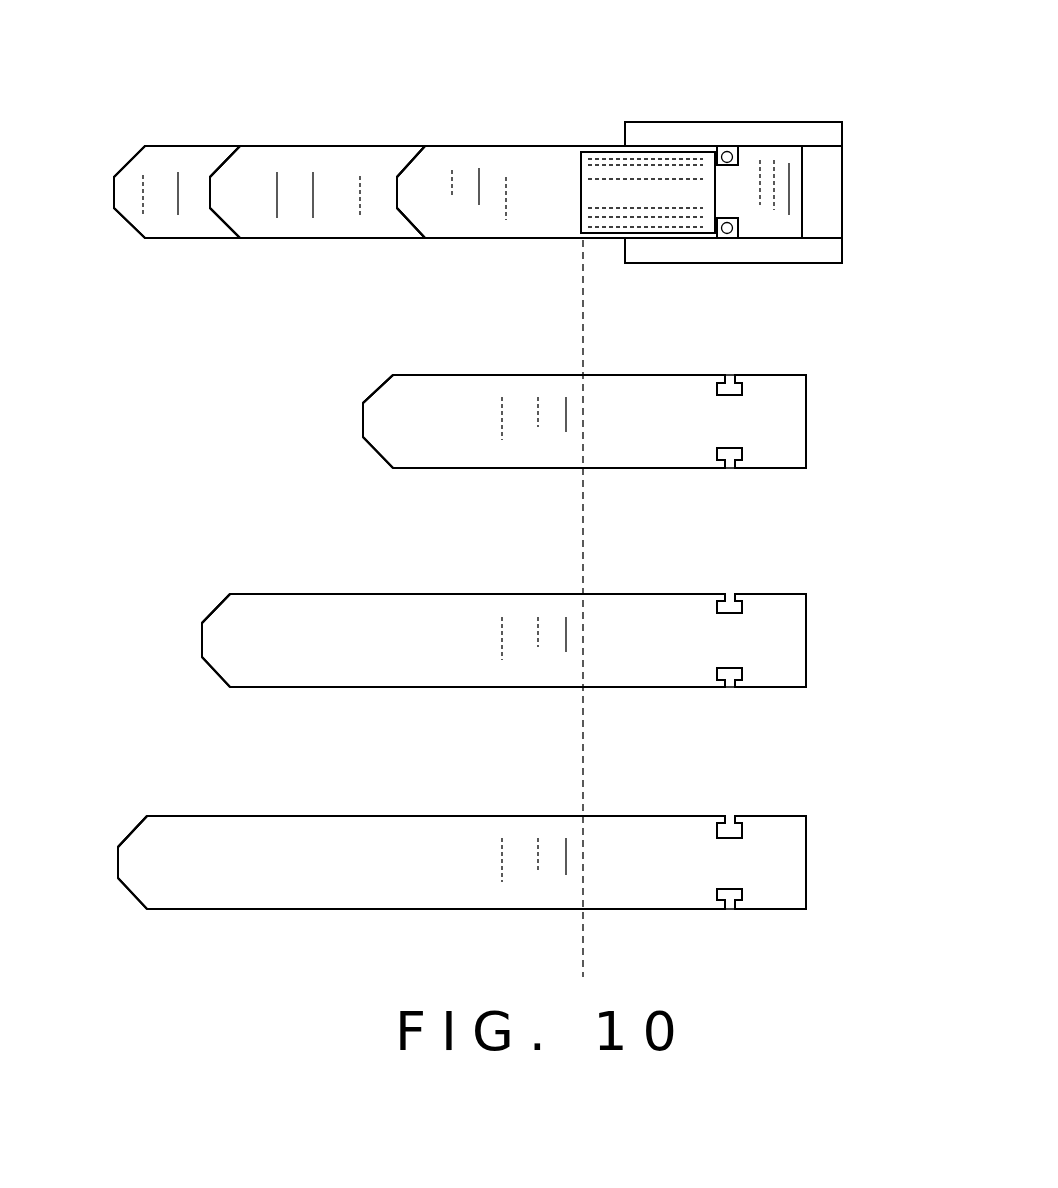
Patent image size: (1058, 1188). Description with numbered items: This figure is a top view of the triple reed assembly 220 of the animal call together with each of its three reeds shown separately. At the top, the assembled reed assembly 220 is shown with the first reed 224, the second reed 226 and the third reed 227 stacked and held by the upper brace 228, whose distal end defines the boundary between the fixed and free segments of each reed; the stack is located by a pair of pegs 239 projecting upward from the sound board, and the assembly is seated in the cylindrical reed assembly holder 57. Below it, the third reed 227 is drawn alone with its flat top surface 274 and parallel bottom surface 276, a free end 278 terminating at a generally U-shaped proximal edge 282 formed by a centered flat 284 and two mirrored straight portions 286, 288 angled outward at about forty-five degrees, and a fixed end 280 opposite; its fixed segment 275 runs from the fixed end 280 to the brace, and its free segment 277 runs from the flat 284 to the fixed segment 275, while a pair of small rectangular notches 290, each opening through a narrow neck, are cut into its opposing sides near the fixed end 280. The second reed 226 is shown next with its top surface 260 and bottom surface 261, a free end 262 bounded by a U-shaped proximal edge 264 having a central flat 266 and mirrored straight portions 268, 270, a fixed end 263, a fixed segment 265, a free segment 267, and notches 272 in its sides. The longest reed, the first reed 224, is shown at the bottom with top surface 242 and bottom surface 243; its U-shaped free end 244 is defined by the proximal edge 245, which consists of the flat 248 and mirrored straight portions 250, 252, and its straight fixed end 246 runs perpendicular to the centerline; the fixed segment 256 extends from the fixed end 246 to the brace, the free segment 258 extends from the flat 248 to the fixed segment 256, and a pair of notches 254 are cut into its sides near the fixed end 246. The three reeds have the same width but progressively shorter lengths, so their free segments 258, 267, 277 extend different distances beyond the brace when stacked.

The triple reed assembly 220 is at (477, 84).
The first reed 224 is at (178, 185).
The second reed 226 is at (345, 178).
The third reed 227 is at (506, 195).
The upper brace 228 is at (614, 165).
The pegs 239 is at (735, 155).
The reed assembly holder 57 is at (808, 125).
The free segment of third reed 277 is at (433, 407).
The proximal edge of third reed 282 is at (380, 378).
The straight portion of third reed proximal edge 286 is at (372, 395).
The flat of third reed 284 is at (362, 420).
The free end of third reed 278 is at (362, 431).
The straight portion of third reed proximal edge 288 is at (375, 453).
The bottom surface of third reed 276 is at (693, 370).
The notches of third reed 290 is at (725, 378).
The fixed segment of third reed 275 is at (787, 397).
The fixed end of third reed 280 is at (806, 437).
The top surface of third reed 274 is at (695, 435).
The free segment of second reed 267 is at (255, 625).
The proximal edge of second reed 264 is at (222, 598).
The straight portion of second reed proximal edge 268 is at (200, 618).
The free end of second reed 262 is at (200, 637).
The flat of second reed 266 is at (200, 645).
The straight portion of second reed proximal edge 270 is at (215, 670).
The top surface of second reed 260 is at (630, 620).
The notches of second reed 272 is at (731, 600).
The fixed segment of second reed 265 is at (787, 630).
The fixed end of second reed 263 is at (806, 665).
The bottom surface of second reed 261 is at (693, 694).
The top surface of first reed 242 is at (418, 848).
The straight portion of first reed proximal edge 250 is at (137, 826).
The proximal edge of first reed 245 is at (128, 840).
The flat of first reed 248 is at (118, 858).
The free end of first reed 244 is at (127, 867).
The straight portion of first reed proximal edge 252 is at (130, 895).
The free segment of first reed 258 is at (380, 888).
The bottom surface of first reed 243 is at (513, 920).
The fixed segment of first reed 256 is at (650, 892).
The notches of first reed 254 is at (742, 830).
The fixed end of first reed 246 is at (806, 868).